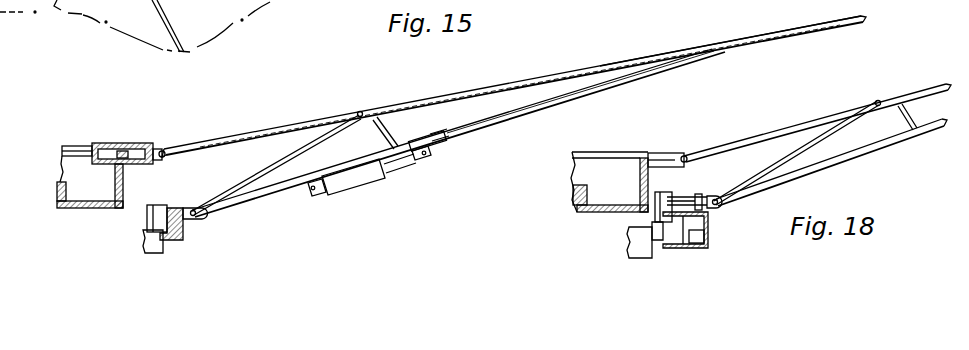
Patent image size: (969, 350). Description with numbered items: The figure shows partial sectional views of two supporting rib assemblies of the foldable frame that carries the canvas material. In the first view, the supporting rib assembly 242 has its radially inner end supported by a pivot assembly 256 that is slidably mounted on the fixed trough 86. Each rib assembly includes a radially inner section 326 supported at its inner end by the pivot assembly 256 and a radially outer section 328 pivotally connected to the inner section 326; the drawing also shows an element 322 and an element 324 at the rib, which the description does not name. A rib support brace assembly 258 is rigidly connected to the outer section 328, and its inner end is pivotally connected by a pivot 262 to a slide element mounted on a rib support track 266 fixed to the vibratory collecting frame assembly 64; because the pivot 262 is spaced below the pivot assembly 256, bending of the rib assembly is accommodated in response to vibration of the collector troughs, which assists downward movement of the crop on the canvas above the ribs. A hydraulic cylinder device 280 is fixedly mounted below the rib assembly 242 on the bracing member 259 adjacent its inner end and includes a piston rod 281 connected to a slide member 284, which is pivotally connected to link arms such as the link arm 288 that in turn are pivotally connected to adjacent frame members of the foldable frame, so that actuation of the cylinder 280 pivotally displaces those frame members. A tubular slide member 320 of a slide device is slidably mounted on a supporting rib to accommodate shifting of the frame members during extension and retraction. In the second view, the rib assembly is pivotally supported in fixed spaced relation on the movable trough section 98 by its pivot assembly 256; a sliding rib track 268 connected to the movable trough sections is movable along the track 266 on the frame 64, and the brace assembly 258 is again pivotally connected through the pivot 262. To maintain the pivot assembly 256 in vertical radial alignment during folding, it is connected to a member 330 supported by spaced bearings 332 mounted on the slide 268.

In FIG. 15, the vibratory collecting frame assembly 64 is at (174, 247).
In FIG. 18, the vibratory collecting frame assembly 64 is at (628, 243).
In FIG. 15, the fixed trough 86 is at (129, 184).
In FIG. 18, the movable trough section 98 is at (627, 182).
In FIG. 15, the supporting rib assembly 242 is at (789, 33).
In FIG. 15, the pivot assembly 256 is at (164, 150).
In FIG. 18, the pivot assembly 256 is at (685, 156).
In FIG. 15, the rib support brace assembly 258 is at (298, 153).
In FIG. 18, the rib support brace assembly 258 is at (868, 153).
In FIG. 15, the bracing member 259 is at (592, 90).
In FIG. 18, the pivot 262 is at (718, 207).
In FIG. 15, the rib support track 266 is at (164, 208).
In FIG. 18, the rib support track 266 is at (655, 225).
In FIG. 18, the sliding rib track 268 is at (709, 237).
In FIG. 15, the hydraulic cylinder device 280 is at (358, 183).
In FIG. 15, the piston rod 281 is at (404, 163).
In FIG. 15, the slide member 284 is at (434, 139).
In FIG. 15, the link arm 288 is at (518, 110).
In FIG. 15, the tubular slide member 320 is at (240, 136).
In FIG. 15, the inner strut 322 is at (505, 84).
In FIG. 15, the pivot 324 is at (360, 111).
In FIG. 18, the radially inner section 326 is at (785, 128).
In FIG. 18, the radially outer section 328 is at (907, 97).
In FIG. 18, the member 330 is at (685, 196).
In FIG. 18, the bearings 332 is at (703, 197).